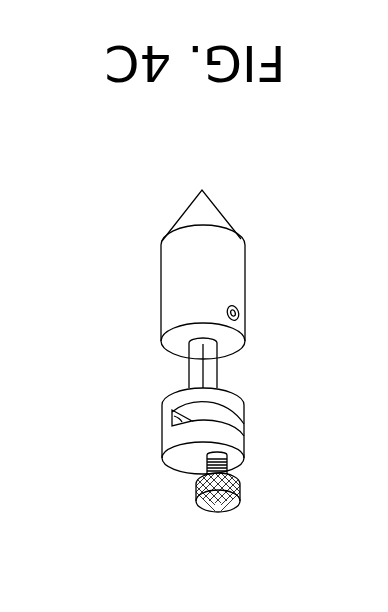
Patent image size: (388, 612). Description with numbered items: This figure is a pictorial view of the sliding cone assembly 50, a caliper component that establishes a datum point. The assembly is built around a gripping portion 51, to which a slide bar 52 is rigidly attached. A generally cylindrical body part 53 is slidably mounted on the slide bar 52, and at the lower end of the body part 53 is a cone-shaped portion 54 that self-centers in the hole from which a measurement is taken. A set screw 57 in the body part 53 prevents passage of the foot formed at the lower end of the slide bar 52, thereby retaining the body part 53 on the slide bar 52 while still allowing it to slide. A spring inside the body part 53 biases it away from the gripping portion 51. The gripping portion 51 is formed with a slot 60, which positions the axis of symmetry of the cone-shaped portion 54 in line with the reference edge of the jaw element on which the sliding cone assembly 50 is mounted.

The sliding cone assembly 50 is at (147, 395).
The gripping portion 51 is at (158, 448).
The slide bar 52 is at (195, 363).
The cylindrical body part 53 is at (187, 255).
The cone-shaped portion 54 is at (205, 217).
The set screw 57 is at (237, 308).
The slot 60 is at (237, 420).